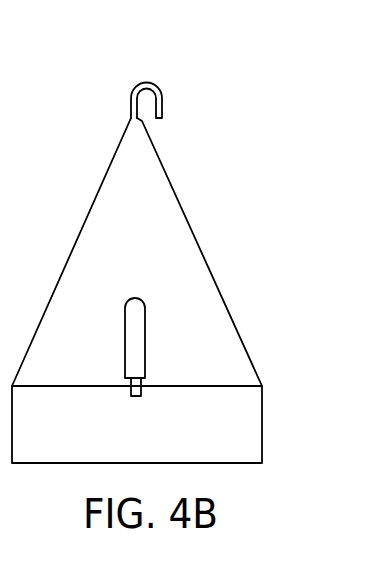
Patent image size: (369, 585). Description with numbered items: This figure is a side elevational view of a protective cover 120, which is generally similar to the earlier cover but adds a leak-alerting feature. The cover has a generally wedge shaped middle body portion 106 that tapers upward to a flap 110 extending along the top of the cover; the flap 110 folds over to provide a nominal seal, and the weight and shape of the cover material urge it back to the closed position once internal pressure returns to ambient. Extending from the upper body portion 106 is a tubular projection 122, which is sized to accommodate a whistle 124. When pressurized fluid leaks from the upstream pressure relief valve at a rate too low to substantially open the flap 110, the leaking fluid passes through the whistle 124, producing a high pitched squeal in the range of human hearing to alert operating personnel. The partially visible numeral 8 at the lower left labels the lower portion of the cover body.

The protective cover 120 is at (85, 105).
The flap 110 is at (157, 82).
The middle body portion 106 is at (171, 183).
The base 8 is at (58, 440).
The tubular projection 122 is at (125, 332).
The whistle 124 is at (142, 396).